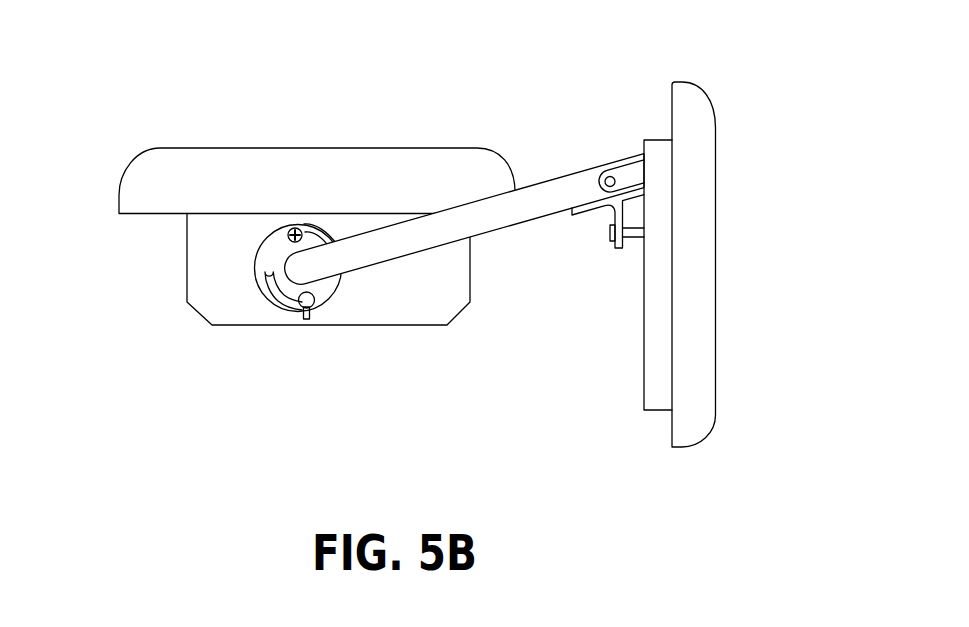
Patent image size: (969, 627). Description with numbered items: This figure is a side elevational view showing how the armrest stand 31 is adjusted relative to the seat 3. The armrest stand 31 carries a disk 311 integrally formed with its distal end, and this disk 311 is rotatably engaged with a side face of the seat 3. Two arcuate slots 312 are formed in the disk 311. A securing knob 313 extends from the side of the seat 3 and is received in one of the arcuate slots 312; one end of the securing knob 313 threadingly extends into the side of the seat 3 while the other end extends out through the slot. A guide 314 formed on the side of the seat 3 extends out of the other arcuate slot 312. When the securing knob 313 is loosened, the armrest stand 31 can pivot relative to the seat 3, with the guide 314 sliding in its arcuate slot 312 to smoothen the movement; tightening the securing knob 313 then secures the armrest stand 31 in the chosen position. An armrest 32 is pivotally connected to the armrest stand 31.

The seat 3 is at (183, 170).
The armrest stand 31 is at (491, 221).
The disk 311 is at (280, 253).
The arcuate slots 312 is at (333, 230).
The securing knob 313 is at (317, 305).
The guide 314 is at (300, 228).
The armrest 32 is at (707, 306).